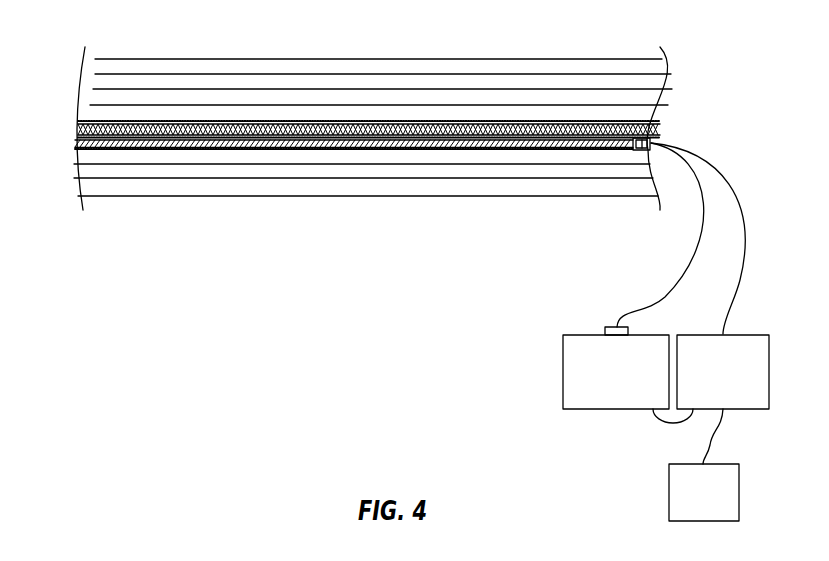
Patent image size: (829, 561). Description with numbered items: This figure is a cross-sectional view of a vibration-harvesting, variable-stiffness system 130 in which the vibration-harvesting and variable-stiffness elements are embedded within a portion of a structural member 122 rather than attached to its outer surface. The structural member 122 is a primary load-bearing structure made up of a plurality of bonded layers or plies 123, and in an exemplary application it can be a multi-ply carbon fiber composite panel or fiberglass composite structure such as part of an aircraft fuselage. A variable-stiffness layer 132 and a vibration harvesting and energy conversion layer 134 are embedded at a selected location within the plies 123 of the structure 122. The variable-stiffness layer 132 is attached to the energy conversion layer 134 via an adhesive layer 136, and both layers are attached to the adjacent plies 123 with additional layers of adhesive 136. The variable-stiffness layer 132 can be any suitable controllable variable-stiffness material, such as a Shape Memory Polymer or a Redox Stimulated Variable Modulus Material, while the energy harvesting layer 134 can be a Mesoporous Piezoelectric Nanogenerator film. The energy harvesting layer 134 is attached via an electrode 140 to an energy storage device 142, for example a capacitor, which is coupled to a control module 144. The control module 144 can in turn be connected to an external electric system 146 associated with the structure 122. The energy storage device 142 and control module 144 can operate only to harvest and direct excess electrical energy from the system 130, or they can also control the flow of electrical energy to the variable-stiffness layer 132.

The structural member 122 is at (224, 52).
The plies 123 is at (472, 67).
The vibration-harvesting, variable-stiffness system 130 is at (339, 284).
The variable-stiffness layer 132 is at (312, 128).
The energy conversion layer 134 is at (230, 144).
The adhesive layer 136 is at (100, 148).
The electrode 140 is at (644, 150).
The energy storage device 142 is at (563, 377).
The control module 144 is at (747, 334).
The external electric system 146 is at (722, 503).